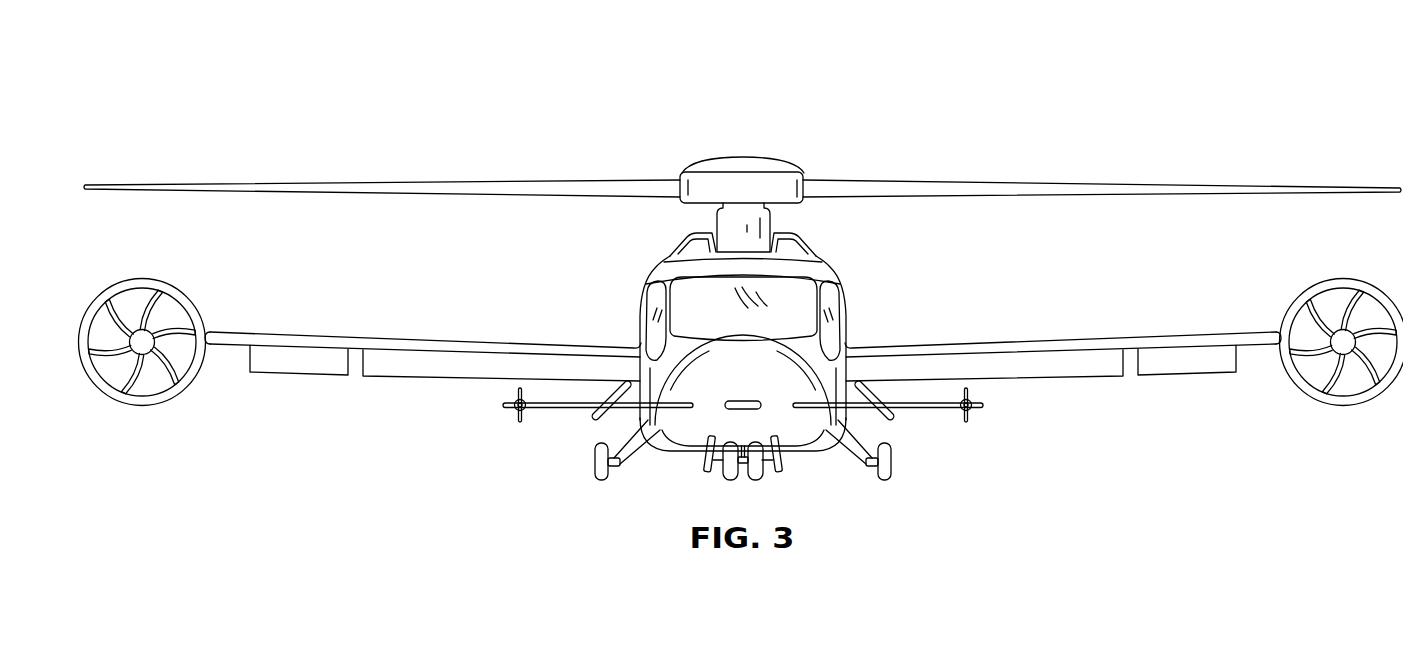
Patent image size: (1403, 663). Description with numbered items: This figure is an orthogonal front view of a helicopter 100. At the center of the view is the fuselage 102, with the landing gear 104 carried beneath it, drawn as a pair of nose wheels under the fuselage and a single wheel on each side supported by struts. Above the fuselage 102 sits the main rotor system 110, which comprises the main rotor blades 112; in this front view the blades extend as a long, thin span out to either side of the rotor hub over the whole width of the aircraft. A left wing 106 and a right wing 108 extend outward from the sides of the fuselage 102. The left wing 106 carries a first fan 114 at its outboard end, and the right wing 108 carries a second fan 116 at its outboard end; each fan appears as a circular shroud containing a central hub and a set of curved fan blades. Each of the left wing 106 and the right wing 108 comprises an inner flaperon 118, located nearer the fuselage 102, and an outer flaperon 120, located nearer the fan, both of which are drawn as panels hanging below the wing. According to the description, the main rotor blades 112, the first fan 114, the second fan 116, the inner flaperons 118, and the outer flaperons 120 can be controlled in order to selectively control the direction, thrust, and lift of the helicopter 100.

The helicopter 100 is at (1092, 103).
The fuselage 102 is at (677, 452).
The landing gear 104 is at (893, 473).
The left wing 106 is at (1070, 340).
The right wing 108 is at (416, 340).
The main rotor system 110 is at (768, 158).
The main rotor blades 112 is at (398, 183).
The first fan 114 is at (1361, 283).
The second fan 116 is at (120, 283).
The inner flaperon 118 is at (445, 380).
The outer flaperon 120 is at (297, 374).